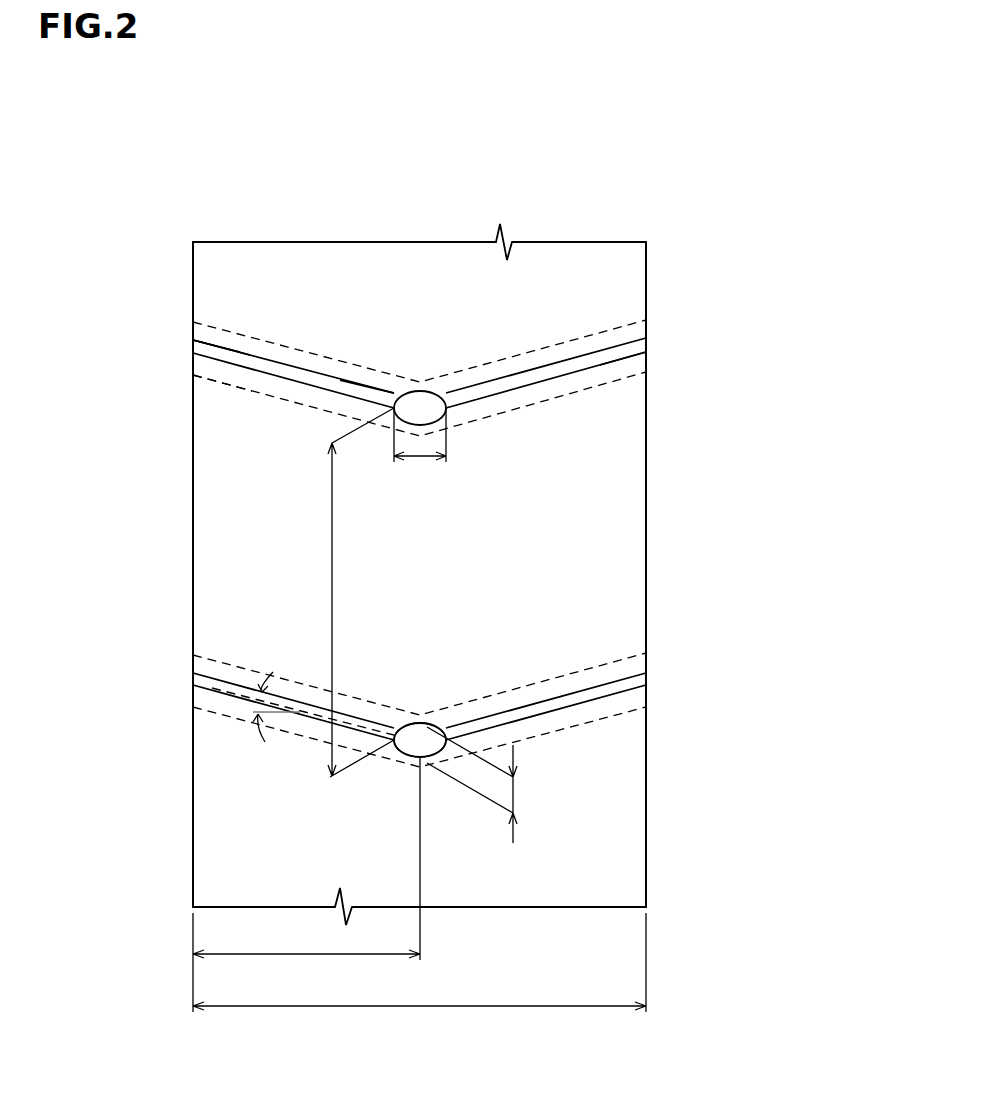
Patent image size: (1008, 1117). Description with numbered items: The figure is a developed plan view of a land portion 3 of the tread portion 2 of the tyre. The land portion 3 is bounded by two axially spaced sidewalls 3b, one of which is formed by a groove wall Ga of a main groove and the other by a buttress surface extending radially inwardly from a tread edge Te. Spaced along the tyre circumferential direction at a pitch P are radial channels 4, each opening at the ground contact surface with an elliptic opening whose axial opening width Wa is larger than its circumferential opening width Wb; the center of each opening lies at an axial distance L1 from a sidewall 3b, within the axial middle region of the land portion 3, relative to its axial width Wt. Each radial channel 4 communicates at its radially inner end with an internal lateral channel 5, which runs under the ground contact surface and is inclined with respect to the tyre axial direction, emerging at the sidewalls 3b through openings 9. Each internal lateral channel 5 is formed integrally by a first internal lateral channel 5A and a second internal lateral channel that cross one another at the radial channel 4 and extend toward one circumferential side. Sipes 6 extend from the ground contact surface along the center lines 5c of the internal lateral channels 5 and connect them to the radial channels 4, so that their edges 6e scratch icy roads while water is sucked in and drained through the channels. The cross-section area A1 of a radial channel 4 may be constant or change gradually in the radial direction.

The tread portion 2 is at (707, 149).
The land portion 3 is at (585, 278).
The sidewall 3b is at (193, 553).
The radial channel 4 is at (420, 405).
The internal lateral channel 5 is at (593, 343).
The first internal lateral channel 5A is at (252, 378).
The center line 5c is at (212, 686).
The sipe 6 is at (282, 370).
The edge 6e is at (223, 358).
The opening 9 is at (205, 343).
The axial opening width Wa is at (420, 457).
The circumferential pitch P is at (332, 508).
The circumferential opening width Wb is at (513, 793).
The cross-section area A1 is at (413, 740).
The groove wall Ga is at (193, 833).
The tread edge Te is at (646, 808).
The axial distance L1 is at (306, 884).
The axial width Wt is at (419, 976).